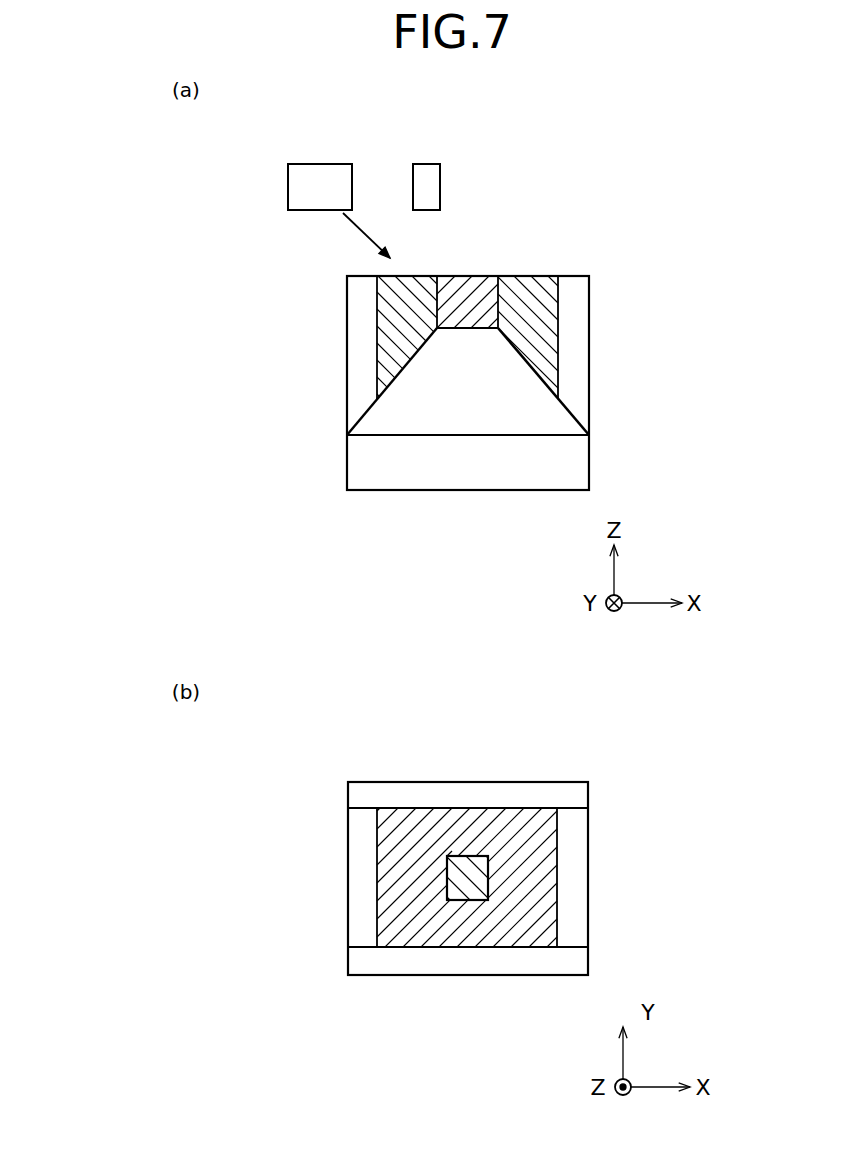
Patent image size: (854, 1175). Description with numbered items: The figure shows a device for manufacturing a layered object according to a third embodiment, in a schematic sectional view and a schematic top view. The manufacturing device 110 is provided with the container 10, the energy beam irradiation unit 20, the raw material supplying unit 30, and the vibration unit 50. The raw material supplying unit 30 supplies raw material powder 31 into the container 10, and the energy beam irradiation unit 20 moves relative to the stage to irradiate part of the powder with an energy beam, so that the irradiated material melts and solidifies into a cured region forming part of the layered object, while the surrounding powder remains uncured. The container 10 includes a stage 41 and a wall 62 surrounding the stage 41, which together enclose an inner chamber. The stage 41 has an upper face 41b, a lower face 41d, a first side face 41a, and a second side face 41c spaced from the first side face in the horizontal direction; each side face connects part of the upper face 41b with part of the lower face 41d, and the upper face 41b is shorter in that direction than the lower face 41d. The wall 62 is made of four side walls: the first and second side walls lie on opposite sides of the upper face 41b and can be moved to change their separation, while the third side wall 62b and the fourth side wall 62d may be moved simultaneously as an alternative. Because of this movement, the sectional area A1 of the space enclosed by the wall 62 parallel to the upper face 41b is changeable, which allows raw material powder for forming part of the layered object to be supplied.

The container 10 is at (601, 299).
The energy beam irradiation unit 20 is at (427, 163).
The raw material supplying unit 30 is at (288, 189).
The raw material powder 31 is at (360, 229).
The stage 41 is at (575, 418).
The first side face 41a is at (417, 352).
The upper face 41b is at (468, 330).
The second side face 41c is at (518, 351).
The lower face 41d is at (468, 434).
The vibration unit 50 is at (563, 462).
The wall 62 is at (340, 408).
The third side wall 62b is at (470, 955).
The fourth side wall 62d is at (407, 798).
The manufacturing device 110 is at (283, 284).
The sectional area A1 is at (520, 830).